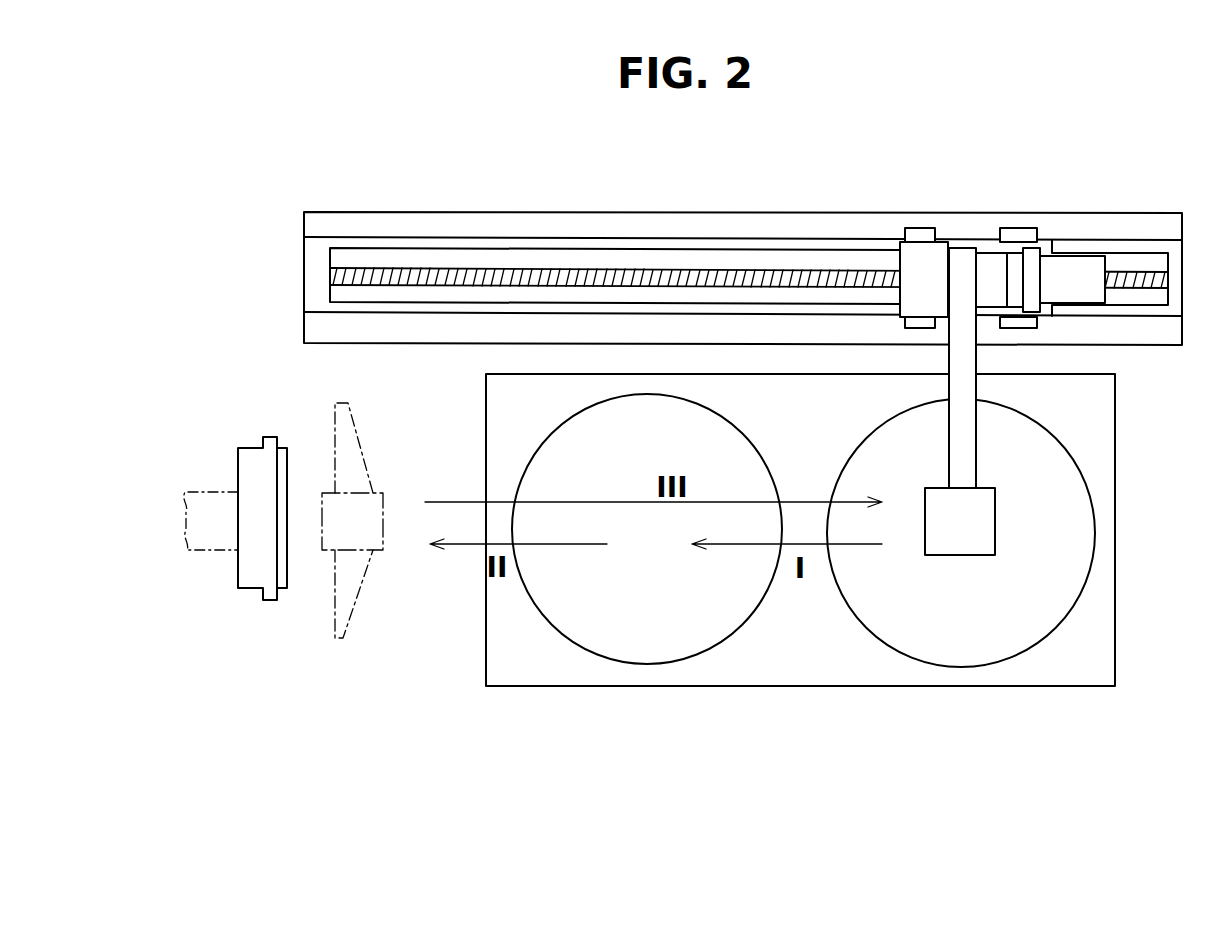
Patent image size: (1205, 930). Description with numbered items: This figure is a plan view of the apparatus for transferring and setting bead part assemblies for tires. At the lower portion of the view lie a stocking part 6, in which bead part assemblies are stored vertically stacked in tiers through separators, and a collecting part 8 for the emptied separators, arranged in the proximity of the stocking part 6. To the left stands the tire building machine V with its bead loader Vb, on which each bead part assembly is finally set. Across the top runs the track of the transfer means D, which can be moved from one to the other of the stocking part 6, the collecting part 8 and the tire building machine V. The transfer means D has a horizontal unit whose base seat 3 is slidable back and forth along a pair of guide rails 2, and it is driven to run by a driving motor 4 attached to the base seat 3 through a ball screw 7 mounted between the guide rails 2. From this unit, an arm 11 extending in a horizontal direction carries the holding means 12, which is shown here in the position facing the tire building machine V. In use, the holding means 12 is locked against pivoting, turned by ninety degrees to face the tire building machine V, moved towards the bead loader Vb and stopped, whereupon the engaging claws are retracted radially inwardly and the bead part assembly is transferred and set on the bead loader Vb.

The guide rails 2 is at (717, 310).
The base seat 3 is at (912, 263).
The driving motor 4 is at (1075, 270).
The stocking part 6 is at (933, 668).
The ball screw 7 is at (500, 270).
The collecting part 8 is at (628, 665).
The arm 11 is at (967, 260).
The holding means 12 is at (333, 642).
The transfer means D is at (988, 226).
The tire building machine V is at (203, 490).
The bead loader Vb is at (270, 437).